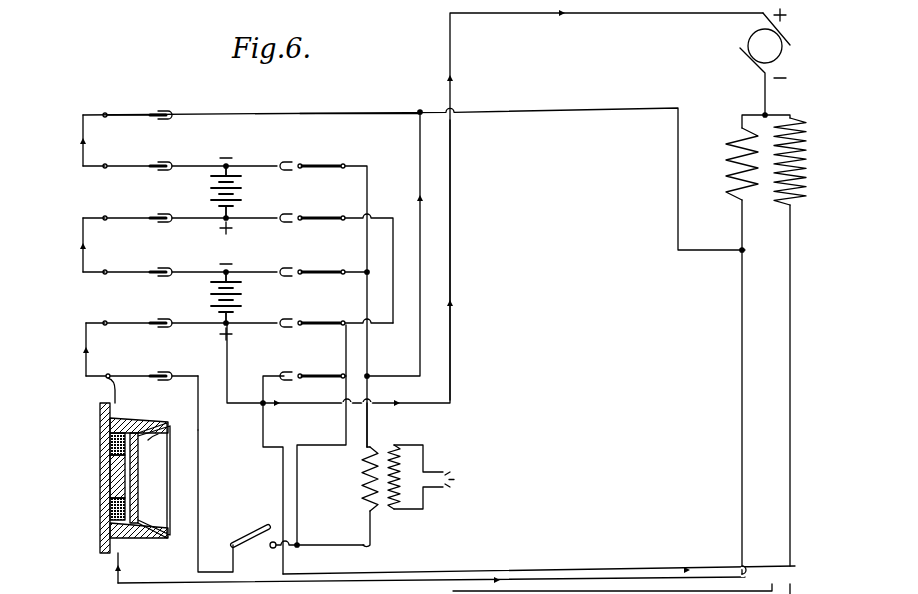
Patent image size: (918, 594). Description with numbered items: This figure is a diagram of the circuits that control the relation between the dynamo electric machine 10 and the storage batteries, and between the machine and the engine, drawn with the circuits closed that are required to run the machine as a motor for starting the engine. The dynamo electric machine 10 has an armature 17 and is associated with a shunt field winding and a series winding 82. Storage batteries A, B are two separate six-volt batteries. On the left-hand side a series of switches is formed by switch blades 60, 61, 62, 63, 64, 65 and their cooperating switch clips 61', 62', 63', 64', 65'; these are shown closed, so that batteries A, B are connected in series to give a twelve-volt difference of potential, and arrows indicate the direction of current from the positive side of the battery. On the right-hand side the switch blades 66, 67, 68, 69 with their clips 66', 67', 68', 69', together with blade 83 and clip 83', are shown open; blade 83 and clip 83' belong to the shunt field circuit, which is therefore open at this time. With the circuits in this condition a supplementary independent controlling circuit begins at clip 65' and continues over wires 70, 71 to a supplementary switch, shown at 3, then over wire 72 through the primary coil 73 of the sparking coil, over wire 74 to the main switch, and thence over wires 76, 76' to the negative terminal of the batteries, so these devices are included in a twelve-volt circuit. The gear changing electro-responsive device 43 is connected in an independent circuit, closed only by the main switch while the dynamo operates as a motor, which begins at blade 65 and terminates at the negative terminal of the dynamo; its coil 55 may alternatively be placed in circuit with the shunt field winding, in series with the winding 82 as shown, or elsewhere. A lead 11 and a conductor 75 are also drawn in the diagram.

The switch blade 60 is at (140, 114).
The switch blade 61 is at (124, 155).
The switch clip 61' is at (217, 155).
The switch blade 62 is at (124, 207).
The switch clip 62' is at (217, 207).
The switch blade 63 is at (124, 261).
The switch clip 63' is at (217, 261).
The switch blade 64 is at (126, 313).
The switch clip 64' is at (217, 313).
The switch blade 65 is at (126, 365).
The switch clip 65' is at (178, 365).
The switch blade 66 is at (332, 294).
The switch clip 66' is at (285, 155).
The switch blade 67 is at (345, 258).
The switch clip 67' is at (285, 207).
The switch blade 68 is at (333, 260).
The switch clip 68' is at (285, 260).
The switch blade 69 is at (344, 423).
The switch clip 69' is at (285, 312).
The switch blade 83 is at (322, 364).
The switch clip 83' is at (281, 462).
The storage battery A is at (240, 192).
The storage battery B is at (240, 298).
The wire 70 is at (198, 393).
The wire 71 is at (199, 478).
The wire 72 is at (338, 543).
The primary coil of the sparking coil 73 is at (363, 488).
The wire 74 is at (373, 425).
The conductor 75 is at (377, 384).
The wire 76 is at (435, 260).
The wire 76' is at (360, 98).
The series winding 82 is at (727, 174).
The dynamo electric machine 10 is at (790, 43).
The armature 17 is at (782, 52).
The coil 55 is at (100, 447).
The gear changing electro-responsive device 43 is at (170, 442).
The voice coil lead 11 is at (160, 434).
The switch 3 is at (254, 542).